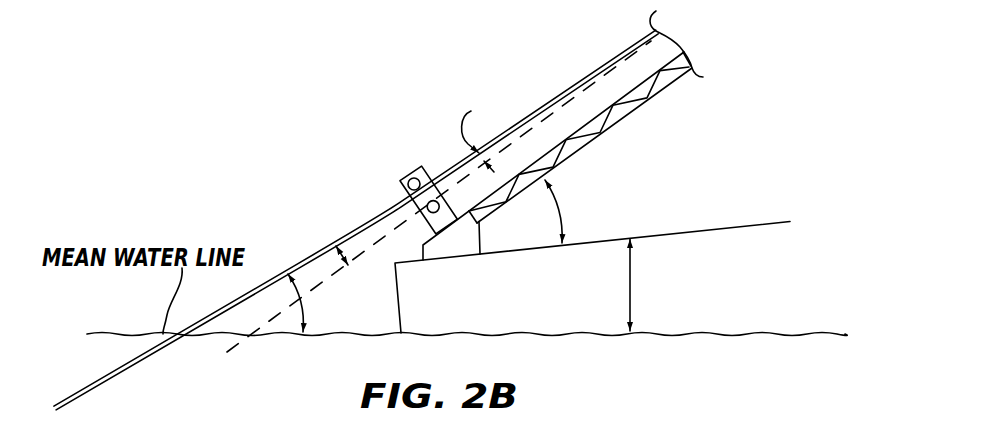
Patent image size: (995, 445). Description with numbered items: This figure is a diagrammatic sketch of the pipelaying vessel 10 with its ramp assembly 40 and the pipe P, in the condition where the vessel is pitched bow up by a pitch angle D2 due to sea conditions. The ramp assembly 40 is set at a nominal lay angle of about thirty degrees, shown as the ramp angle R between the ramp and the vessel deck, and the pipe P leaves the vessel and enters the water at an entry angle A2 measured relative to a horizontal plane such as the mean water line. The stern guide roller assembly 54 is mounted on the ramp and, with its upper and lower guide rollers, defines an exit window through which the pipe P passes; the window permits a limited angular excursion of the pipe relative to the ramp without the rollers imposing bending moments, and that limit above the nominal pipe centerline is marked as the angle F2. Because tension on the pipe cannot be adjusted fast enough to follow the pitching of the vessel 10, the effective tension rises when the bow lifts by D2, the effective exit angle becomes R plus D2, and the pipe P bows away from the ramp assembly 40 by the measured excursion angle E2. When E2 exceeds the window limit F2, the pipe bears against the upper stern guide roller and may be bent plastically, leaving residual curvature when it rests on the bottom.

The pipelaying vessel 10 is at (716, 228).
The ramp assembly 40 is at (619, 120).
The stern guide roller assembly 54 is at (411, 170).
The pipe P is at (293, 268).
The pitch angle D2 is at (647, 285).
The ramp angle R is at (557, 211).
The entry angle A2 is at (307, 303).
The pipe excursion angle E2 is at (340, 258).
The window excursion limit angle F2 is at (479, 131).